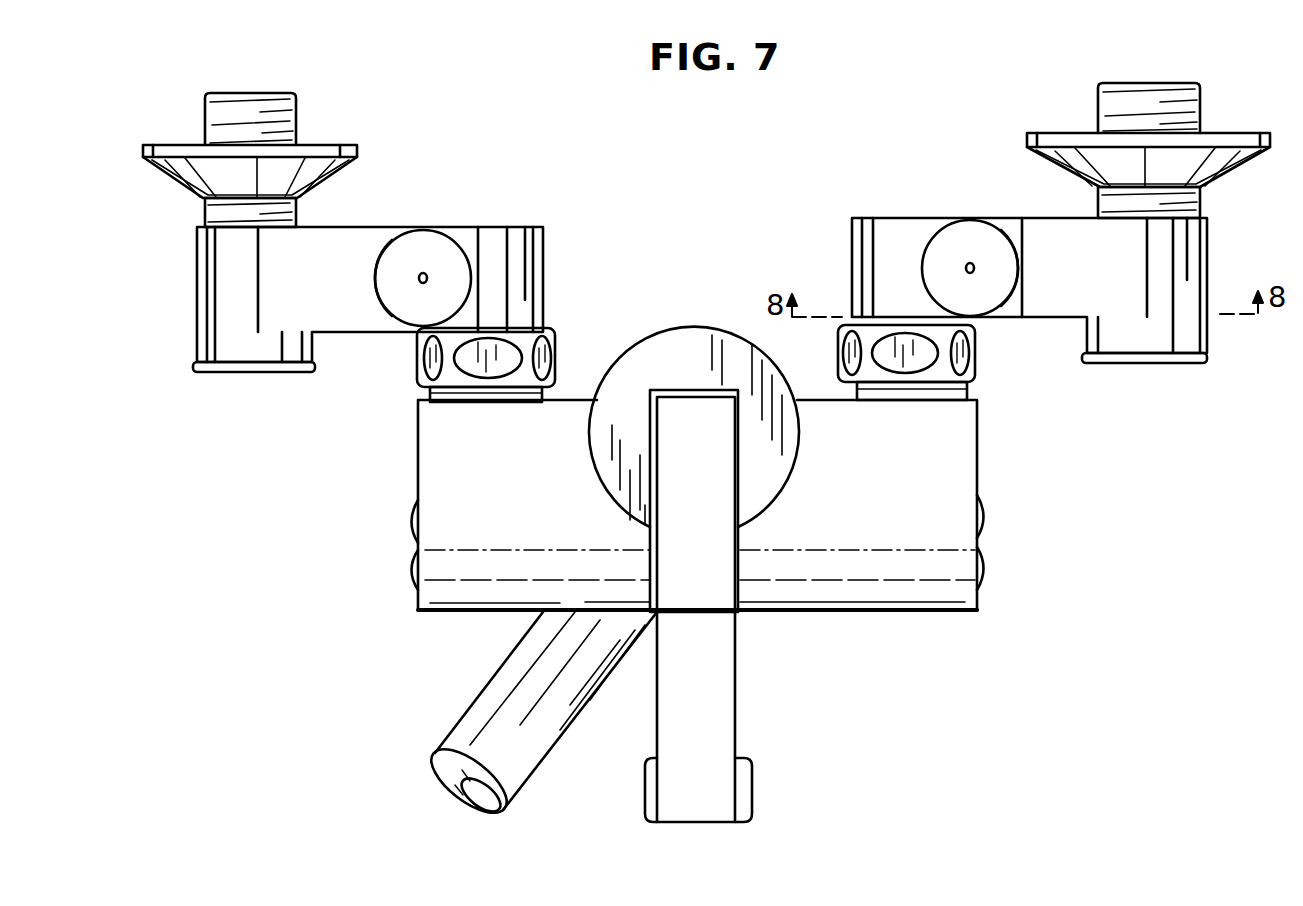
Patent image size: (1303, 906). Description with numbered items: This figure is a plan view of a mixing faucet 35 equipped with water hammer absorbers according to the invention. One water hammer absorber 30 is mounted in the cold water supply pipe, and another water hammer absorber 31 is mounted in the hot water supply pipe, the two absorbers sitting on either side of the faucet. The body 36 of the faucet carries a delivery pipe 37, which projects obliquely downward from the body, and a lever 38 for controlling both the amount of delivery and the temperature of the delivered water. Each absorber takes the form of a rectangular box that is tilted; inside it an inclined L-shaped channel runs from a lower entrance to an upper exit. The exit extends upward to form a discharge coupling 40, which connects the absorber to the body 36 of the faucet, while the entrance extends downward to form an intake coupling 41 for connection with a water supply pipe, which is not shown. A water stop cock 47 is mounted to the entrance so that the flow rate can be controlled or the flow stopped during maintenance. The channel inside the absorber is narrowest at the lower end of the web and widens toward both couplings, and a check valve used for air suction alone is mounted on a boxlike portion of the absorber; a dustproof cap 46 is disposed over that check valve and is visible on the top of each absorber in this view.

The water hammer absorber 30 is at (1058, 285).
The water hammer absorber 31 is at (300, 390).
The mixing faucet 35 is at (618, 576).
The body 36 is at (905, 612).
The delivery pipe 37 is at (462, 718).
The lever 38 is at (740, 730).
The discharge coupling 40 is at (975, 355).
The intake coupling 41 is at (1200, 190).
The dustproof cap 46 is at (963, 226).
The water stop cock 47 is at (1183, 365).